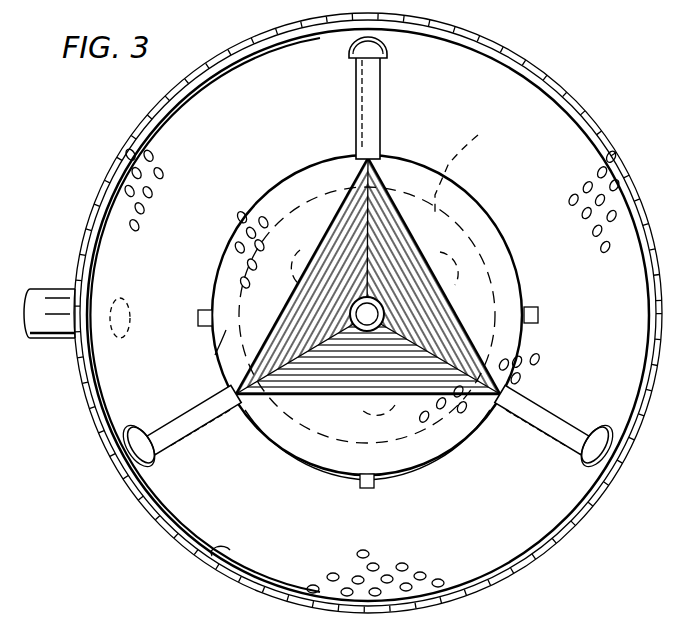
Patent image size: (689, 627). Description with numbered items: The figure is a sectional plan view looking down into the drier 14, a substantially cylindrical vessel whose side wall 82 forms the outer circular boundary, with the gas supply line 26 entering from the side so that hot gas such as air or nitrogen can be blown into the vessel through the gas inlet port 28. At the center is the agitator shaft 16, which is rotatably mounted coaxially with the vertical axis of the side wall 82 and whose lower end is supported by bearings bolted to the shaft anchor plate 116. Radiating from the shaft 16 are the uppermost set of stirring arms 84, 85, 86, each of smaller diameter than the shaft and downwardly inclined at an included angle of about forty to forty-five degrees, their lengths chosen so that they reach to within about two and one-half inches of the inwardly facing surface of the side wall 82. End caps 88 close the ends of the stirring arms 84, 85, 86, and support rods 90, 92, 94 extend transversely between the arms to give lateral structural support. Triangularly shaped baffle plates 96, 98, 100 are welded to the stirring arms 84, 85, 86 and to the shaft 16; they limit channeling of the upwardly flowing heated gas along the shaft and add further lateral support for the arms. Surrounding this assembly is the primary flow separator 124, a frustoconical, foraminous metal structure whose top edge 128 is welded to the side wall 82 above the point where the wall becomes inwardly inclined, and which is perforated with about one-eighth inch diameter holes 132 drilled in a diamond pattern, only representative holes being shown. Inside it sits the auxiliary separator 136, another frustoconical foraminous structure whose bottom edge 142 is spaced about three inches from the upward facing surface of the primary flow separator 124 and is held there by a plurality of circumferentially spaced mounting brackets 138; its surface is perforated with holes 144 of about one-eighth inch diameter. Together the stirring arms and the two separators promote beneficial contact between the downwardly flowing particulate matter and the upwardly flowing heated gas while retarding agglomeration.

The drier 14 is at (603, 92).
The agitator shaft 16 is at (350, 316).
The gas supply line 26 is at (53, 340).
The gas inlet port 28 is at (144, 313).
The side wall 82 is at (118, 152).
The stirring arm 84 is at (228, 418).
The stirring arm 85 is at (378, 108).
The stirring arm 86 is at (562, 418).
The end cap 88 is at (356, 52).
The support rod 90 is at (316, 240).
The support rod 92 is at (448, 318).
The support rod 94 is at (334, 468).
The baffle plate 96 is at (348, 210).
The baffle plate 98 is at (408, 258).
The baffle plate 100 is at (413, 400).
The shaft anchor plate 116 is at (390, 262).
The primary flow separator 124 is at (103, 250).
The top edge 128 is at (222, 548).
The holes 132 is at (160, 185).
The auxiliary separator 136 is at (226, 357).
The mounting bracket 138 is at (200, 328).
The bottom edge 142 is at (293, 458).
The holes 144 is at (238, 240).